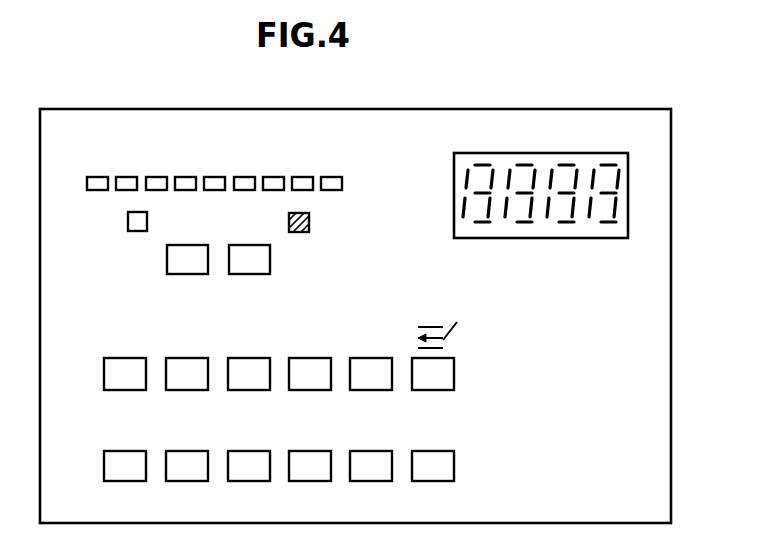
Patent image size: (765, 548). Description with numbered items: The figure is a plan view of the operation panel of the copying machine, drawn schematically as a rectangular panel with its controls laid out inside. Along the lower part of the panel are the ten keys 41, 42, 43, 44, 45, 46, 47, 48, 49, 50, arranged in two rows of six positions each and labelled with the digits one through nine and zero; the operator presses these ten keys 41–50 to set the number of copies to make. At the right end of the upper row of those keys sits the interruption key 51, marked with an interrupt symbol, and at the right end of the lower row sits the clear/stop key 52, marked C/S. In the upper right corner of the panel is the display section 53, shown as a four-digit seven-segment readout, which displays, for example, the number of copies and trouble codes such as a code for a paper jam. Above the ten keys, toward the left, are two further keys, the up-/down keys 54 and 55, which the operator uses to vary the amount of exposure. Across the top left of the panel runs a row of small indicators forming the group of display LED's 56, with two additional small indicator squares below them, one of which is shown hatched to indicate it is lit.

The ten key 41 is at (124, 390).
The ten key 42 is at (188, 390).
The ten key 43 is at (250, 390).
The ten key 44 is at (311, 390).
The ten key 45 is at (372, 390).
The ten key 46 is at (122, 481).
The ten key 47 is at (188, 481).
The ten key 48 is at (250, 481).
The ten key 49 is at (311, 481).
The ten key 50 is at (372, 481).
The interruption key 51 is at (434, 390).
The clear/stop key 52 is at (434, 481).
The display section 53 is at (543, 238).
The up-/down key 54 is at (252, 274).
The up-/down key 55 is at (190, 274).
The group of display LED's 56 is at (187, 177).